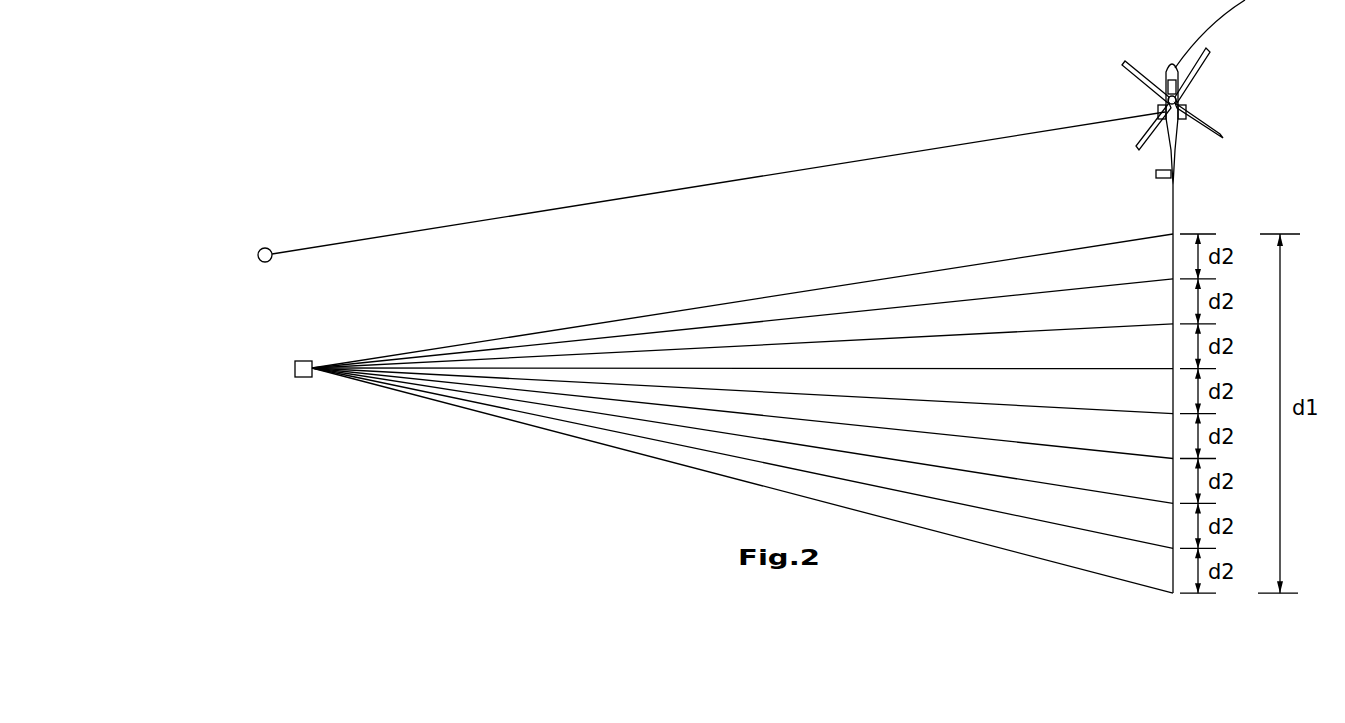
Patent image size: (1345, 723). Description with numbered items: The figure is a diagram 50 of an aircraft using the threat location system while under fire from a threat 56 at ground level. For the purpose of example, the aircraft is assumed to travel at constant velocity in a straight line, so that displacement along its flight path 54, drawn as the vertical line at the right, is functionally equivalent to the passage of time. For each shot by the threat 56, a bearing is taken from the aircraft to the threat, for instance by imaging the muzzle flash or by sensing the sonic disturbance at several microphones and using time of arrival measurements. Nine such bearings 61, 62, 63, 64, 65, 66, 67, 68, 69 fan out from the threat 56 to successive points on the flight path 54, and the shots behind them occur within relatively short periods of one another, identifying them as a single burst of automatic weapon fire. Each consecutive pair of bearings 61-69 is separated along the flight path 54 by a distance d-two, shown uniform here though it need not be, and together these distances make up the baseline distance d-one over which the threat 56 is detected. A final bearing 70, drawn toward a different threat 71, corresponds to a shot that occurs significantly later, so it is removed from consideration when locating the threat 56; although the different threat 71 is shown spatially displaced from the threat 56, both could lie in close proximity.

The diagram 50 is at (449, 147).
The flight path 54 is at (1177, 200).
The threat 56 is at (304, 361).
The bearing 61 is at (1080, 569).
The bearing 62 is at (1080, 529).
The bearing 63 is at (1080, 489).
The bearing 64 is at (1080, 449).
The bearing 65 is at (1080, 409).
The bearing 66 is at (1080, 369).
The bearing 67 is at (1080, 329).
The bearing 68 is at (1080, 288).
The bearing 69 is at (1080, 248).
The final bearing 70 is at (768, 172).
The different threat 71 is at (265, 248).